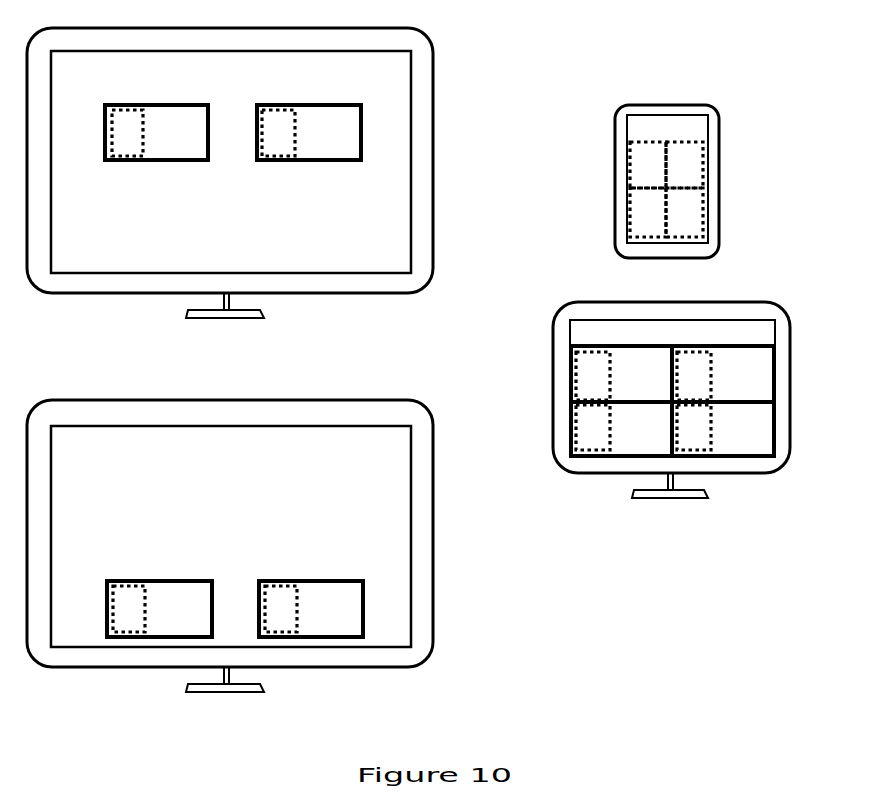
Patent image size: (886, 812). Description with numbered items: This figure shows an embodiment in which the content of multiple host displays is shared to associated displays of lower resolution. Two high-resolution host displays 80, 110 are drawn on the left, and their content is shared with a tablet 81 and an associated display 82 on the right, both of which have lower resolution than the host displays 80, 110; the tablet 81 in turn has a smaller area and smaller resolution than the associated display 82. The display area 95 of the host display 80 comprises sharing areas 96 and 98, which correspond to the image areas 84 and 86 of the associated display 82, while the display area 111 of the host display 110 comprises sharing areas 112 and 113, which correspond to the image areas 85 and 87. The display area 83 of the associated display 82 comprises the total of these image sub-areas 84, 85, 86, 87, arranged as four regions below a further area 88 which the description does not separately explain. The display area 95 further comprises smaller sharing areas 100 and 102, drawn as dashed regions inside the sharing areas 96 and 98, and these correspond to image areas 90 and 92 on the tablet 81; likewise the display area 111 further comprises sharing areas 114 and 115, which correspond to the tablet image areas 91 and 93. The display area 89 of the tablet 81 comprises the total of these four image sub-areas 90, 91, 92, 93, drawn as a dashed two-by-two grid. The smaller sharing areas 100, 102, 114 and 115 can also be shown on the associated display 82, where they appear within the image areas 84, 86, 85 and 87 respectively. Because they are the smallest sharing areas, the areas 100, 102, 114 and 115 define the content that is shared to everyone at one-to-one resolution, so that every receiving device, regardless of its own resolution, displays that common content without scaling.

The host display 80 is at (64, 28).
The display area 95 is at (411, 92).
The sharing area 96 is at (108, 115).
The sharing area 98 is at (262, 115).
The sharing area 100 is at (163, 117).
The sharing area 102 is at (318, 117).
The host display 110 is at (63, 400).
The display area 111 is at (411, 466).
The sharing area 112 is at (110, 587).
The sharing area 113 is at (262, 587).
The sharing area 114 is at (167, 592).
The sharing area 115 is at (318, 592).
The tablet 81 is at (690, 105).
The display area 89 is at (712, 122).
The image sub-area 90 is at (630, 152).
The image sub-area 91 is at (630, 212).
The image sub-area 92 is at (703, 163).
The image sub-area 93 is at (703, 213).
The associated display 82 is at (740, 302).
The display area 83 is at (775, 330).
The header bar 88 is at (576, 337).
The image area 84 is at (573, 374).
The image area 85 is at (573, 426).
The image area 86 is at (777, 367).
The image area 87 is at (777, 420).